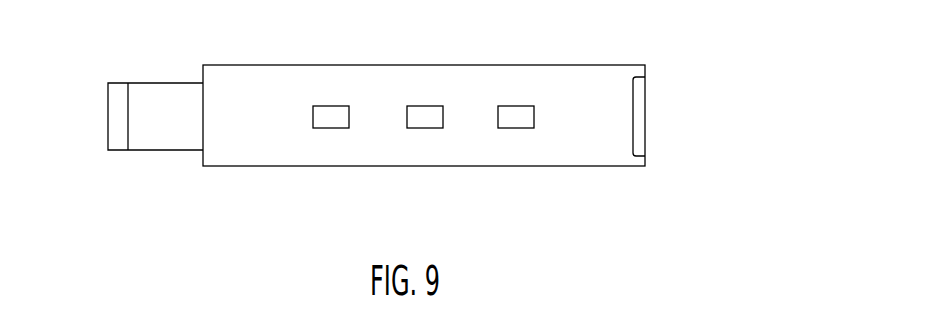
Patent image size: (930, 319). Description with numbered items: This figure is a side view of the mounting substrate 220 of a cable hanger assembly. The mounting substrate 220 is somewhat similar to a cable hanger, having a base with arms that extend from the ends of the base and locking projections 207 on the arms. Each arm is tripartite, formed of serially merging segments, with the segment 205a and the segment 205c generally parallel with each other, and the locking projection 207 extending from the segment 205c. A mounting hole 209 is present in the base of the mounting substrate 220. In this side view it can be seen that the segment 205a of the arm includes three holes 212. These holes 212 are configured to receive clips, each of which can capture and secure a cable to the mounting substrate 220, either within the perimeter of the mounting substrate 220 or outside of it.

The segment 205a is at (268, 73).
The segment 205c is at (148, 143).
The locking projection 207 is at (113, 125).
The hole 212 is at (425, 110).
The mounting hole 209 is at (638, 109).
The mounting substrate 220 is at (674, 84).